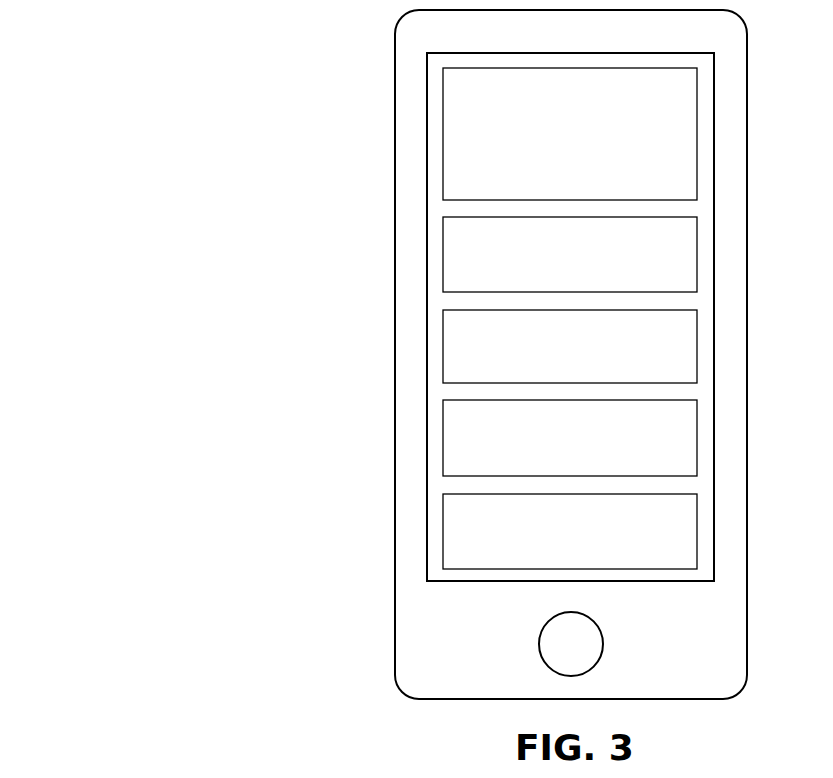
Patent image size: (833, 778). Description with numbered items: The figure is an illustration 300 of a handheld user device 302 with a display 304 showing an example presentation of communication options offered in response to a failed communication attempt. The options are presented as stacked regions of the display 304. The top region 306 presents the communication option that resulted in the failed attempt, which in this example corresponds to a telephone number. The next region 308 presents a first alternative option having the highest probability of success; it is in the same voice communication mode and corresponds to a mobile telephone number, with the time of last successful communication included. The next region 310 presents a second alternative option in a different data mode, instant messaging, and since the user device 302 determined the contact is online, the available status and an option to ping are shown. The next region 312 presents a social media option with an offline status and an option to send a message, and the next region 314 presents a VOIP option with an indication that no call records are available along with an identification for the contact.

The illustration 300 is at (84, 36).
The handheld user device 302 is at (395, 65).
The display 304 is at (427, 220).
The top region 306 is at (697, 152).
The next region 308 is at (697, 253).
The next region 310 is at (697, 348).
The next region 312 is at (697, 437).
The next region 314 is at (697, 531).